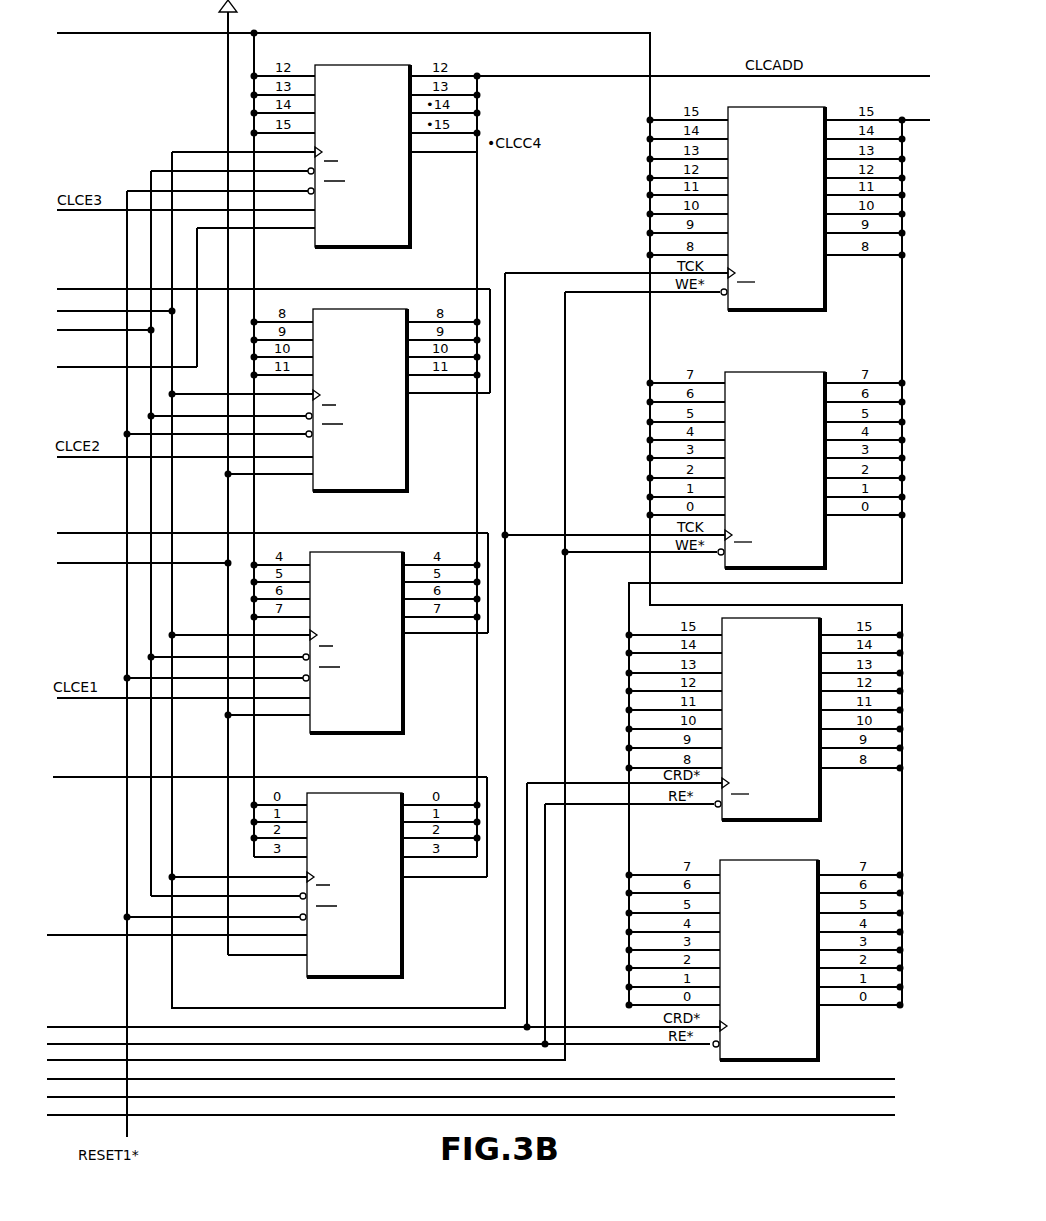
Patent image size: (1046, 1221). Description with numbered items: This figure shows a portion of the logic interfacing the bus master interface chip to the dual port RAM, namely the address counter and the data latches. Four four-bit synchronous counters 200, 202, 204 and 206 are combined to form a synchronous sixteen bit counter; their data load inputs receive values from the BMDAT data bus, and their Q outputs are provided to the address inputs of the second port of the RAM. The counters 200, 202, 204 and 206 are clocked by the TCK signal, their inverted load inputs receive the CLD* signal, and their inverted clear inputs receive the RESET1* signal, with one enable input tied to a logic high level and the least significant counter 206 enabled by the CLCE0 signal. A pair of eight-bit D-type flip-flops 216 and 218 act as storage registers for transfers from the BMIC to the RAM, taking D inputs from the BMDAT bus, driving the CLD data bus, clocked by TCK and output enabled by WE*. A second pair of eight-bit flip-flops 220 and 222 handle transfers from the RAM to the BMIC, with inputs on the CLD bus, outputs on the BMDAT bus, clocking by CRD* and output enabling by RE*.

The 4 bit synchronous counter 200 is at (412, 190).
The 4 bit synchronous counter 202 is at (409, 440).
The 4 bit synchronous counter 204 is at (405, 678).
The 4 bit synchronous counter 206 is at (404, 922).
The 8 bit D-type flip-flop 216 is at (827, 280).
The 8 bit D-type flip-flop 218 is at (827, 536).
The 8 bit flip-flop 220 is at (822, 792).
The 8 bit flip-flop 222 is at (820, 1030).